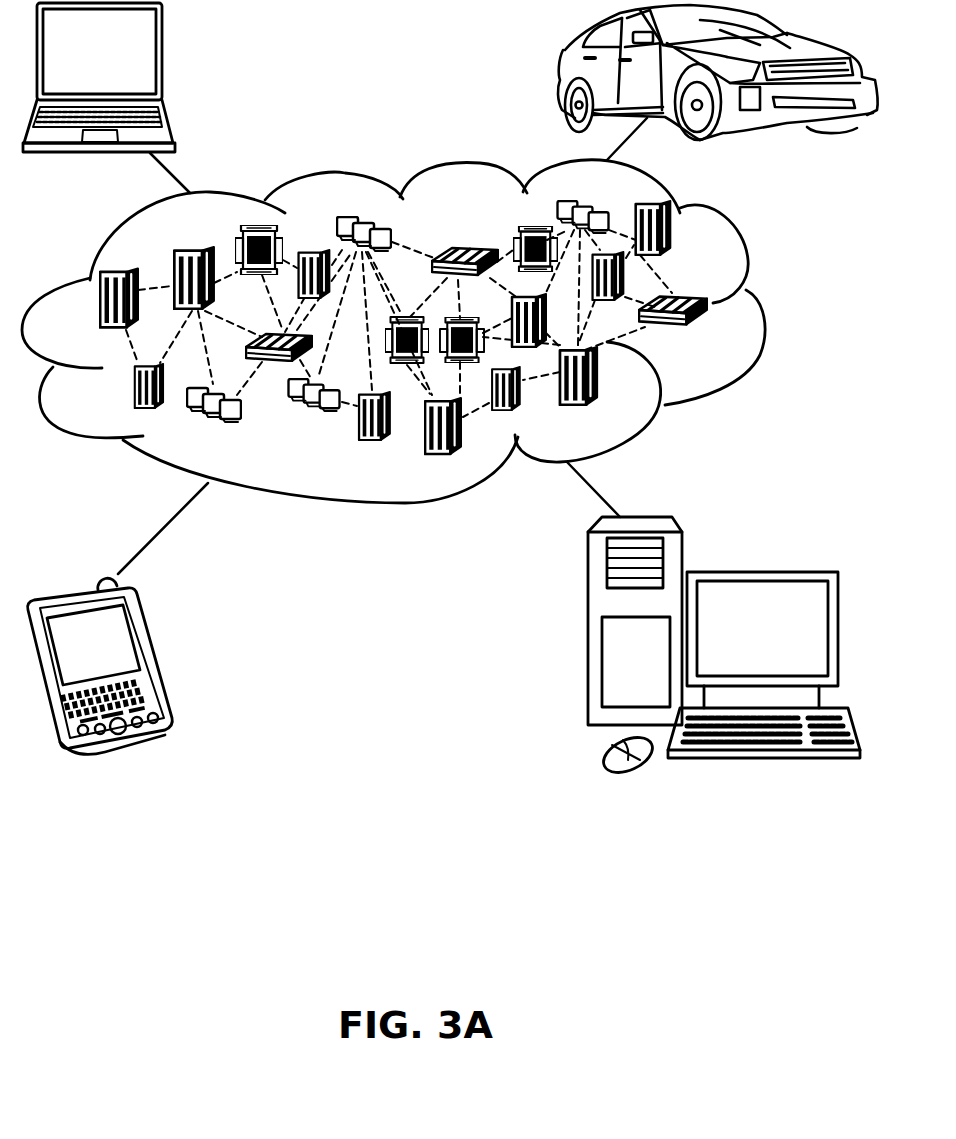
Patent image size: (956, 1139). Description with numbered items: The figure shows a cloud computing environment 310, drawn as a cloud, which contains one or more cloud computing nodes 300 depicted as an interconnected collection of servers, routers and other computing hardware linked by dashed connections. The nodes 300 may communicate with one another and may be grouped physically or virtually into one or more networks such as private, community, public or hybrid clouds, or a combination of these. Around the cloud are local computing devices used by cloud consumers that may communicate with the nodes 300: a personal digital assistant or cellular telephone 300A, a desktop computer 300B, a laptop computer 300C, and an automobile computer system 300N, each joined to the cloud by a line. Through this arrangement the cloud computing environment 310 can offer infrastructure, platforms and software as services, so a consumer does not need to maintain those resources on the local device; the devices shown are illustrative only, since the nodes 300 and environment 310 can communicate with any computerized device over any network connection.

The cloud computing nodes 300 is at (707, 335).
The cloud computing environment 310 is at (760, 318).
The personal digital assistant or cellular telephone 300A is at (153, 657).
The desktop computer 300B is at (762, 572).
The laptop computer 300C is at (163, 60).
The automobile computer system 300N is at (558, 72).